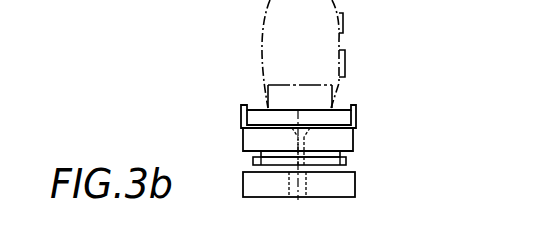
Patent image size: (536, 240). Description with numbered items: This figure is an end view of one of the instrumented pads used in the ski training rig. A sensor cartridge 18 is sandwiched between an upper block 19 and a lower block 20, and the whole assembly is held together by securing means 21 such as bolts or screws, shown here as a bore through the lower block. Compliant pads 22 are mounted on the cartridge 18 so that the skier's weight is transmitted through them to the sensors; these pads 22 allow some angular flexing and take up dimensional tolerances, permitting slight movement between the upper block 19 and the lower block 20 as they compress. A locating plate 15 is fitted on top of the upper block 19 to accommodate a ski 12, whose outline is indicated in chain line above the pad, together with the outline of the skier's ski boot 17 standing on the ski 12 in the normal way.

The skis 12 is at (343, 110).
The locating plates 15 is at (241, 112).
The ski boots 17 is at (268, 15).
The cartridge 18 is at (289, 158).
The upper block 19 is at (338, 141).
The lower block 20 is at (343, 188).
The securing means 21 is at (310, 185).
The compliant pads 22 is at (263, 151).